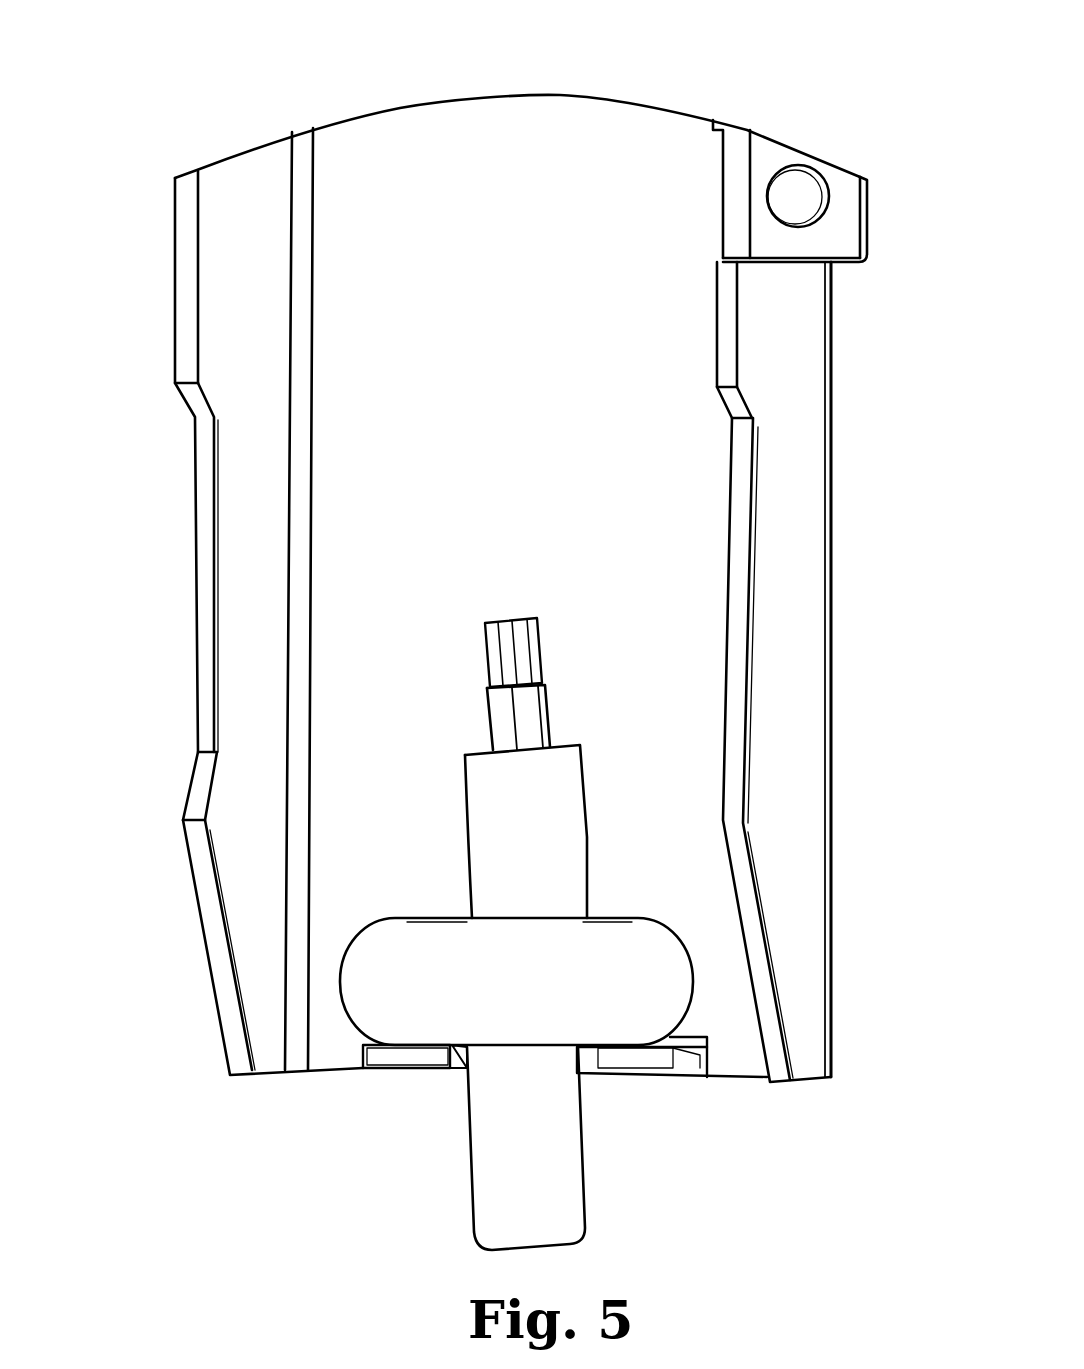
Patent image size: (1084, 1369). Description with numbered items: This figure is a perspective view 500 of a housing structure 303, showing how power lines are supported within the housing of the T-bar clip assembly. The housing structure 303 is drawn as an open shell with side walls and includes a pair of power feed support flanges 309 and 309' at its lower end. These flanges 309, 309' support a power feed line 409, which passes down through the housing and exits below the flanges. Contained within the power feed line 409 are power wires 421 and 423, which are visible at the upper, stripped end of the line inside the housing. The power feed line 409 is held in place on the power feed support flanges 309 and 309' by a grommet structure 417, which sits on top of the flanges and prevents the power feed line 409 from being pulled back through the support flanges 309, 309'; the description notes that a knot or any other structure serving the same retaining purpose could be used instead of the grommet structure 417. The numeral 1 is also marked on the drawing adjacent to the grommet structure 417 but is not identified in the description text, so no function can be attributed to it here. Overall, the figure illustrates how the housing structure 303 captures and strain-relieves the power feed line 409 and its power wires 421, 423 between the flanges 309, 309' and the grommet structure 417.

The perspective view 500 is at (473, 541).
The housing structure 303 is at (785, 450).
The sensor assembly 1 is at (663, 977).
The grommet structure 417 is at (400, 983).
The power wire 421 is at (493, 620).
The power wire 423 is at (520, 617).
The power feed support flange 309 is at (377, 1120).
The power feed support flange 309' is at (672, 1095).
The power feed line 409 is at (510, 1150).